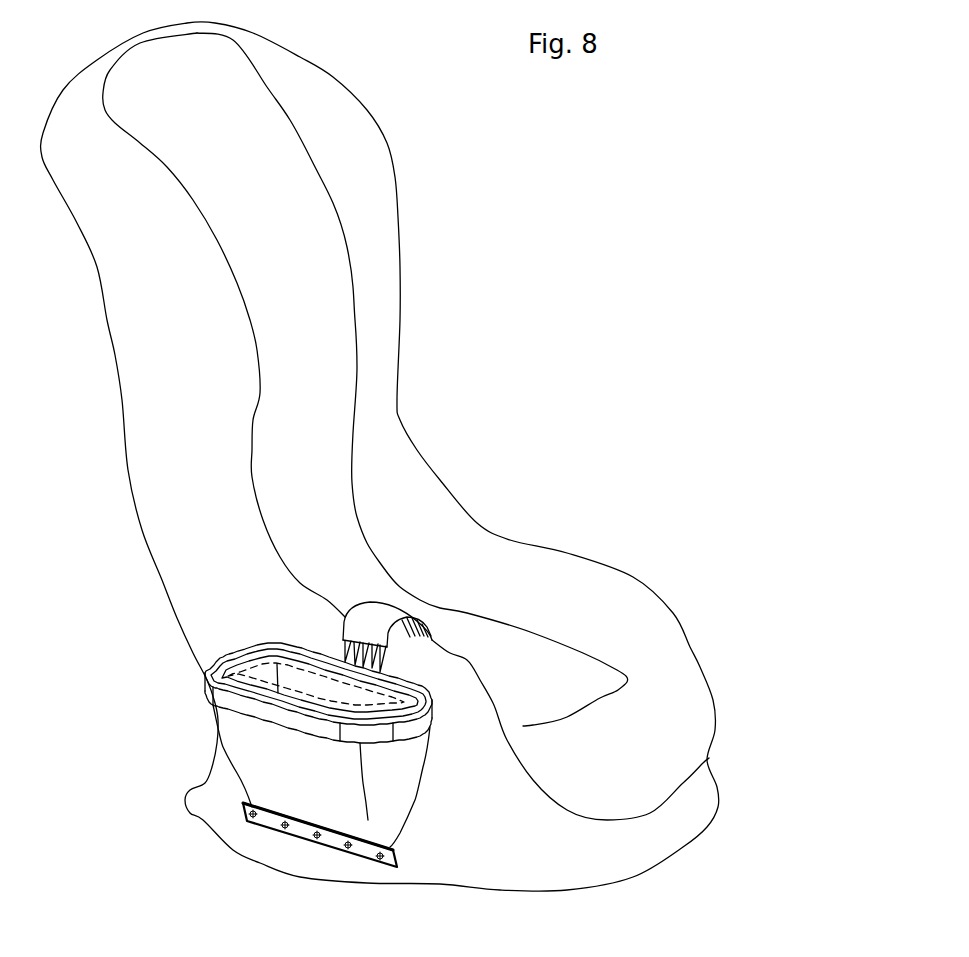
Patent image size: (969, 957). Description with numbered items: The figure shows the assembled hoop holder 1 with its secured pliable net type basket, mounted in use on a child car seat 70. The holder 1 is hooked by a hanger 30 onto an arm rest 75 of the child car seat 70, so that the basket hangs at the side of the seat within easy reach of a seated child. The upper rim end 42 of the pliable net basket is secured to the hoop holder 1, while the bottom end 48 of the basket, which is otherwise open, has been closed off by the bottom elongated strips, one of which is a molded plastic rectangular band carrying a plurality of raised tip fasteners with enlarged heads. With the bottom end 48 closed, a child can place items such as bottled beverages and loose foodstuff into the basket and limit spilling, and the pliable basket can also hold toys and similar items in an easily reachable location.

The hoop holder 1 is at (179, 693).
The child car seat 70 is at (333, 335).
The arm rest 75 is at (312, 614).
The hanger 30 is at (383, 613).
The upper rim end 42 is at (247, 672).
The open bottom end 48 is at (250, 790).